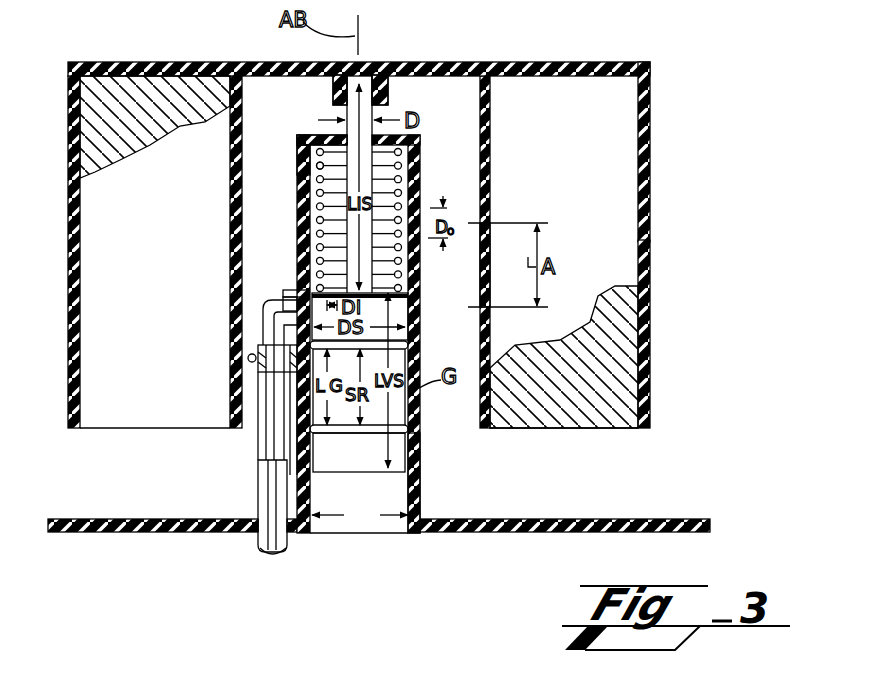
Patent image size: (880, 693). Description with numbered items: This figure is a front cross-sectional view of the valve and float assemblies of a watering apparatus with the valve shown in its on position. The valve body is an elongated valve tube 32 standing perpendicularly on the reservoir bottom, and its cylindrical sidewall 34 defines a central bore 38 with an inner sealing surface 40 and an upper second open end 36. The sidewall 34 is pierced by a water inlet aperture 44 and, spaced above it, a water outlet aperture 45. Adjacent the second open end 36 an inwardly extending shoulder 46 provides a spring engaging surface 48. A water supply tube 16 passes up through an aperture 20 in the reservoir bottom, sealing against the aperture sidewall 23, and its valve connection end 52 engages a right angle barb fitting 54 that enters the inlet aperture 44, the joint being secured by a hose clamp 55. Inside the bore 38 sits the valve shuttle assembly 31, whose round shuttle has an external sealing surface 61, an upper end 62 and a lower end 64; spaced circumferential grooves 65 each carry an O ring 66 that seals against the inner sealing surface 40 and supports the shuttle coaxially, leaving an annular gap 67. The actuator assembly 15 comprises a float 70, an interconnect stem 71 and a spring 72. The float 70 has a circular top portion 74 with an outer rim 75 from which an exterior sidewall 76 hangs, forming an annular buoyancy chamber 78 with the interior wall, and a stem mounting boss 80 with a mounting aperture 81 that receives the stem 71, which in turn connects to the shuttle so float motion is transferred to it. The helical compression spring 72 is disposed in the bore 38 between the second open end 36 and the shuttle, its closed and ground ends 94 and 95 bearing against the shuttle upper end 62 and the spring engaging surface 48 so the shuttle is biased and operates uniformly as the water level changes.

The actuator assembly 15 is at (361, 56).
The water supply tube 16 is at (258, 477).
The aperture 20 is at (258, 519).
The aperture sidewall 23 is at (274, 552).
The valve shuttle assembly 31 is at (419, 298).
The valve tube 32 is at (421, 512).
The cylindrical sidewall 34 is at (419, 332).
The second open end 36 is at (416, 140).
The valve body central bore 38 is at (363, 534).
The inner sealing surface 40 is at (421, 503).
The water inlet aperture 44 is at (297, 293).
The water outlet aperture 45 is at (421, 217).
The shoulder 46 is at (316, 134).
The spring engaging surface 48 is at (304, 157).
The valve connection end 52 is at (258, 407).
The right angle barb fitting 54 is at (262, 328).
The hose clamp 55 is at (258, 385).
The external sealing surface 61 is at (419, 399).
The upper end 62 is at (421, 268).
The lower end 64 is at (362, 473).
The grooves 65 is at (419, 408).
The O ring 66 is at (410, 410).
The annular gap 67 is at (312, 477).
The float 70 is at (594, 60).
The interconnect stem 71 is at (381, 107).
The spring 72 is at (405, 158).
The top portion 74 is at (460, 62).
The outer rim 75 is at (648, 62).
The exterior sidewall 76 is at (652, 206).
The annular buoyancy chamber 78 is at (132, 117).
The stem mounting boss 80 is at (409, 68).
The mounting aperture 81 is at (346, 104).
The spring end 94 is at (453, 245).
The spring end 95 is at (300, 163).